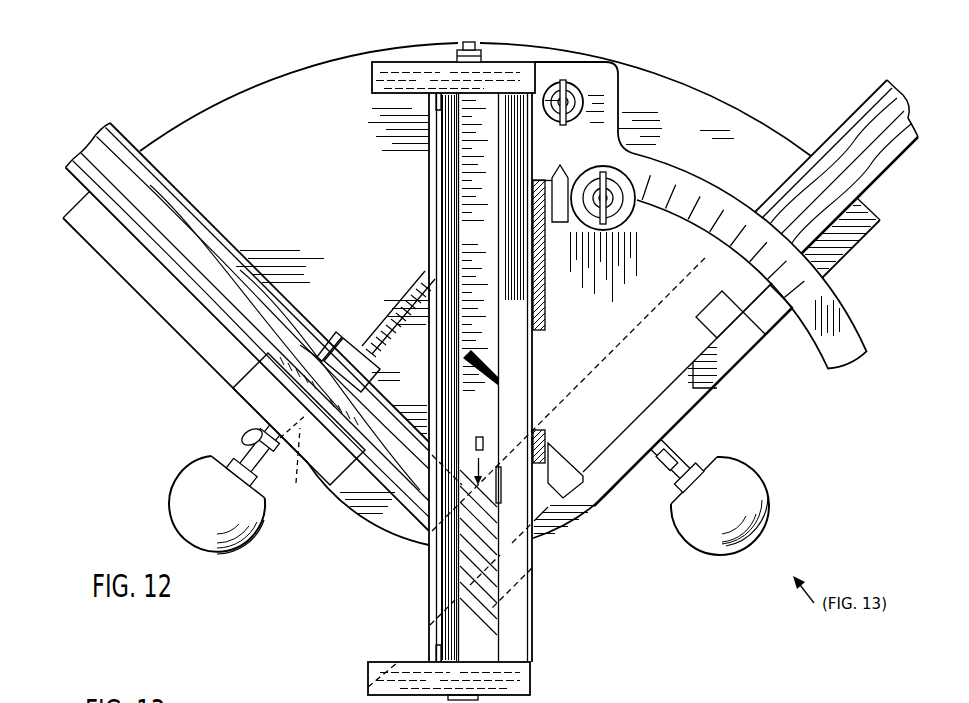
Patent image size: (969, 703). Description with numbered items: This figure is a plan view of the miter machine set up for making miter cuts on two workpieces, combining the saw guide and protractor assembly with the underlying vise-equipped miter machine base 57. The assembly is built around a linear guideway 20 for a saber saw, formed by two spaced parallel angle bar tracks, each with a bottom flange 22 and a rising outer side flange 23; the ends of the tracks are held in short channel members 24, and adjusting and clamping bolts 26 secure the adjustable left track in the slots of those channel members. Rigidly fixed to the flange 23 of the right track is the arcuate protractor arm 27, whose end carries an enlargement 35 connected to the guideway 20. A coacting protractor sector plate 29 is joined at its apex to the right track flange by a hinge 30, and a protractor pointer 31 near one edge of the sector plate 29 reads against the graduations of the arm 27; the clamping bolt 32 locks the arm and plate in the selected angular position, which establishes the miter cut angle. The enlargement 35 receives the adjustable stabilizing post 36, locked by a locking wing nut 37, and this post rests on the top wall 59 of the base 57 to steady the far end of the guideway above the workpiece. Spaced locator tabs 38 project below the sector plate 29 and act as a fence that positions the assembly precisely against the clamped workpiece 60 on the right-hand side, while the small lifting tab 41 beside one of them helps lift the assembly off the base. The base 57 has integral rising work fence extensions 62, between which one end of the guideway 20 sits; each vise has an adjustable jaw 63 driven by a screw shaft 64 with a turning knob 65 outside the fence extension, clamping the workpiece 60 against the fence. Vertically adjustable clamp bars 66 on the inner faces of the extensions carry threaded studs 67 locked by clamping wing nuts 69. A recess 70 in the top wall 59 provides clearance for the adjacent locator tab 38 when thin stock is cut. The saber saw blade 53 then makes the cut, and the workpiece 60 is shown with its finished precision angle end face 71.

The linear guideway 20 is at (424, 158).
The bottom flange 22 is at (467, 262).
The outer side flange 23 is at (434, 190).
The channel members 24 is at (392, 78).
The adjusting and clamping bolts 26 is at (473, 47).
The arcuate protractor arm 27 is at (828, 305).
The protractor sector plate 29 is at (652, 298).
The hinge 30 is at (556, 537).
The protractor pointer 31 is at (551, 192).
The clamping bolt 32 is at (613, 211).
The enlargement 35 is at (605, 97).
The stabilizing post 36 is at (577, 94).
The locking wing nut 37 is at (565, 85).
The locator tabs 38 is at (731, 338).
The lifting tab 41 is at (768, 318).
The saber saw blade 53 is at (479, 436).
The miter machine base 57 is at (742, 128).
The top wall 59 is at (327, 186).
The workpiece 60 is at (218, 262).
The work fence extensions 62 is at (262, 400).
The adjustable jaw 63 is at (347, 345).
The screw shafts 64 is at (420, 296).
The turning knobs 65 is at (255, 525).
The clamp bars 66 is at (245, 372).
The threaded studs 67 is at (294, 461).
The clamping wing nuts 69 is at (243, 439).
The recess 70 is at (700, 358).
The angle end face 71 is at (498, 468).